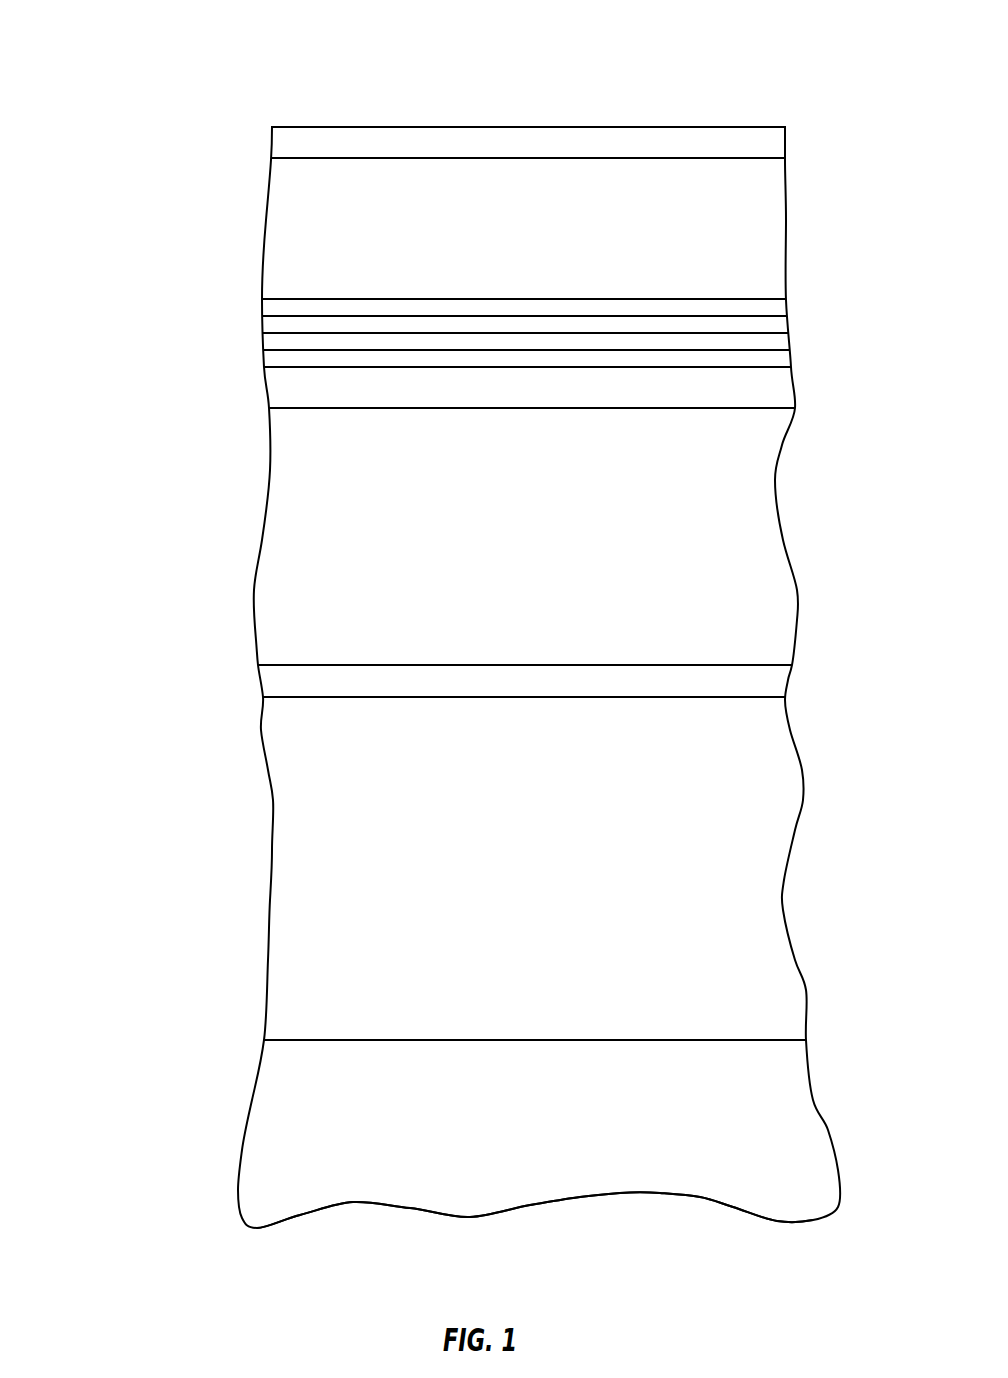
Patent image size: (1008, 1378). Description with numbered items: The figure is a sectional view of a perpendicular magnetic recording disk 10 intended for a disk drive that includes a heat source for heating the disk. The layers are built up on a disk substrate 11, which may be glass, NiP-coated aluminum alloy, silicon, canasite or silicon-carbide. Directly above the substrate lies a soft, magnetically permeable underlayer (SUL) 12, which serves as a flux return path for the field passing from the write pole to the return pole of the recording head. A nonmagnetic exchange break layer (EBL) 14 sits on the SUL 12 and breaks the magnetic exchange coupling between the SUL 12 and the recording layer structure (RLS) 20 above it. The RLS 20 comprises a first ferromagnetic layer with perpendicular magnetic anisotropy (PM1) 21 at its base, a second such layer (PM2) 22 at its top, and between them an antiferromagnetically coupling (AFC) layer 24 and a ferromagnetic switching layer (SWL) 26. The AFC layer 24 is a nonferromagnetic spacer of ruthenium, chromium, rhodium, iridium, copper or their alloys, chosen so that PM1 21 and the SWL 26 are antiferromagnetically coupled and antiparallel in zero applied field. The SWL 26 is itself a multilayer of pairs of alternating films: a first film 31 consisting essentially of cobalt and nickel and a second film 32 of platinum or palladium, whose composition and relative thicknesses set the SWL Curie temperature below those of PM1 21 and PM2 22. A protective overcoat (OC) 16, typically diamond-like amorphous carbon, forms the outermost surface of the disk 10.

The perpendicular magnetic recording disk 10 is at (178, 52).
The disk substrate 11 is at (812, 1135).
The soft underlayer (SUL) 12 is at (785, 828).
The exchange break layer (EBL) 14 is at (778, 684).
The protective overcoat (OC) 16 is at (778, 143).
The recording layer structure (RLS) 20 is at (182, 160).
The first ferromagnetic layer with perpendicular magnetic anisotropy (PM1) 21 is at (773, 556).
The second ferromagnetic layer with perpendicular magnetic anisotropy (PM2) 22 is at (780, 226).
The antiferromagnetically coupling (AFC) layer 24 is at (787, 385).
The ferromagnetic switching layer (SWL) 26 is at (803, 298).
The first film 31 is at (270, 324).
The second film 32 is at (269, 305).